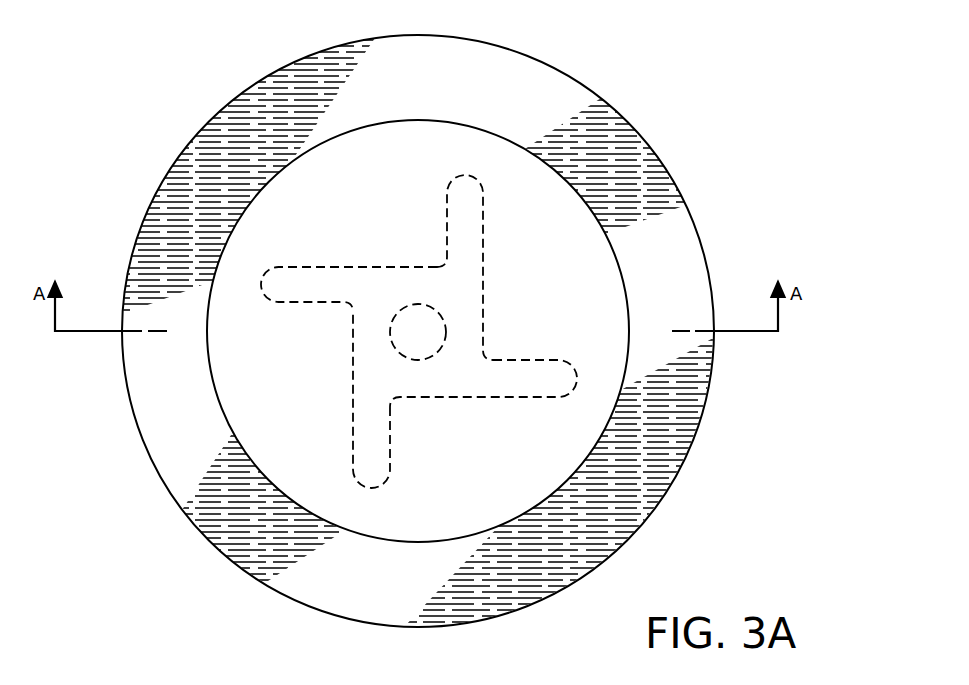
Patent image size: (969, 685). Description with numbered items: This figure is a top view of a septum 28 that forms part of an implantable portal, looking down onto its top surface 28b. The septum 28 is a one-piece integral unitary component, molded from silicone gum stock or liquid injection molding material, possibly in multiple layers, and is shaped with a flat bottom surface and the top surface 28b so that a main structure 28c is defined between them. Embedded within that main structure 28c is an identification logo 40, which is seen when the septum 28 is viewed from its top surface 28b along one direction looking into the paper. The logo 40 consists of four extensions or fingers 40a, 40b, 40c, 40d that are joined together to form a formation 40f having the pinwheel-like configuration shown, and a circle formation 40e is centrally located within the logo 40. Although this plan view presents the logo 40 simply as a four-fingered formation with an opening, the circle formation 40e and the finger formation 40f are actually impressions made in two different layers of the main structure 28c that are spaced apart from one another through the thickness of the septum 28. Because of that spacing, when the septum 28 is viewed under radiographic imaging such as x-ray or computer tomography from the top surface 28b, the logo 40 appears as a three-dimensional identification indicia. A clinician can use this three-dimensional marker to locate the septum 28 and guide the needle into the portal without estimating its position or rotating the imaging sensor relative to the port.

The septum 28 is at (685, 109).
The top surface 28b is at (252, 413).
The main structure 28c is at (247, 537).
The identification logo 40 is at (505, 419).
The finger 40a is at (262, 279).
The finger 40b is at (470, 173).
The finger 40c is at (578, 379).
The finger 40d is at (380, 487).
The circle formation 40e is at (415, 318).
The formation 40f is at (394, 385).